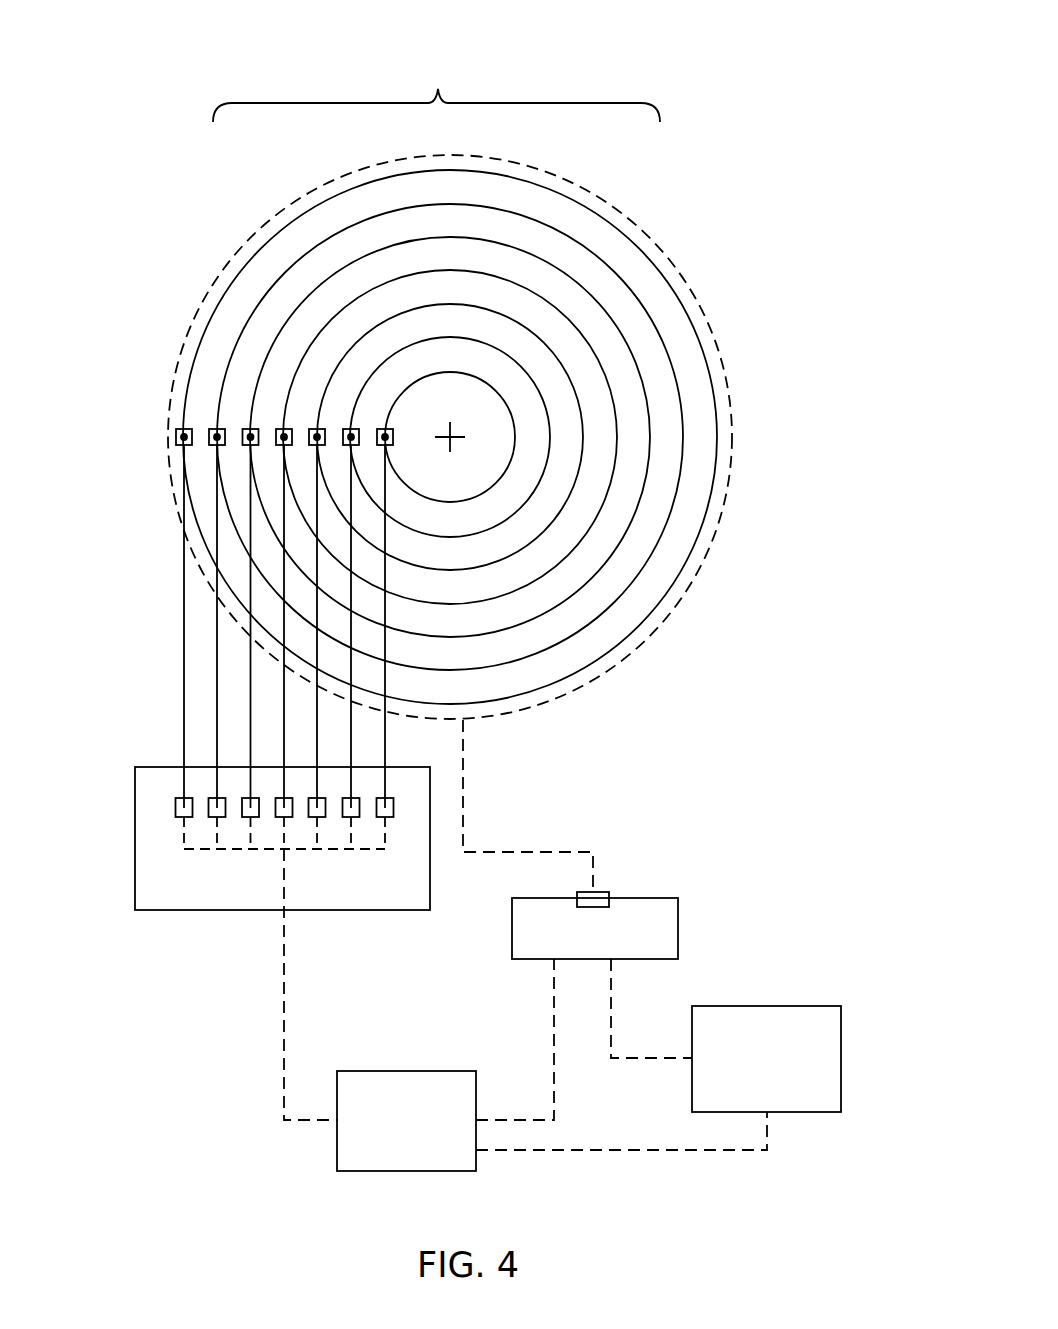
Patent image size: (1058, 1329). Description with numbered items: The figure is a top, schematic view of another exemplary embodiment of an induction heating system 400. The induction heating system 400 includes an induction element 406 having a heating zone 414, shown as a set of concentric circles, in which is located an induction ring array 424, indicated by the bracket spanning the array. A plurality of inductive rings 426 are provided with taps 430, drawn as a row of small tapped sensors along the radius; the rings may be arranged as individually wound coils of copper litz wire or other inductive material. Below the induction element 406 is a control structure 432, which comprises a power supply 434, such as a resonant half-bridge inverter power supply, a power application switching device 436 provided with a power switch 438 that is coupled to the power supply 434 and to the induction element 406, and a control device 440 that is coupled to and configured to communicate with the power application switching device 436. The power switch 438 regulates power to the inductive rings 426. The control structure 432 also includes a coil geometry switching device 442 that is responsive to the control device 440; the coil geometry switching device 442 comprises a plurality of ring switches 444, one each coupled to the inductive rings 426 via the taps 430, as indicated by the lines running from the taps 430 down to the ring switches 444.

The induction heating system 400 is at (753, 52).
The induction ring array 424 is at (436, 92).
The heating zone 414 is at (608, 250).
The inductive rings 426 is at (688, 563).
The induction element 406 is at (690, 287).
The taps 430 is at (158, 441).
The control structure 432 is at (123, 1013).
The coil geometry switching device 442 is at (203, 912).
The ring switches 444 is at (173, 820).
The power application switching device 436 is at (678, 930).
The power switch 438 is at (607, 890).
The control device 440 is at (408, 1070).
The power supply 434 is at (841, 1058).